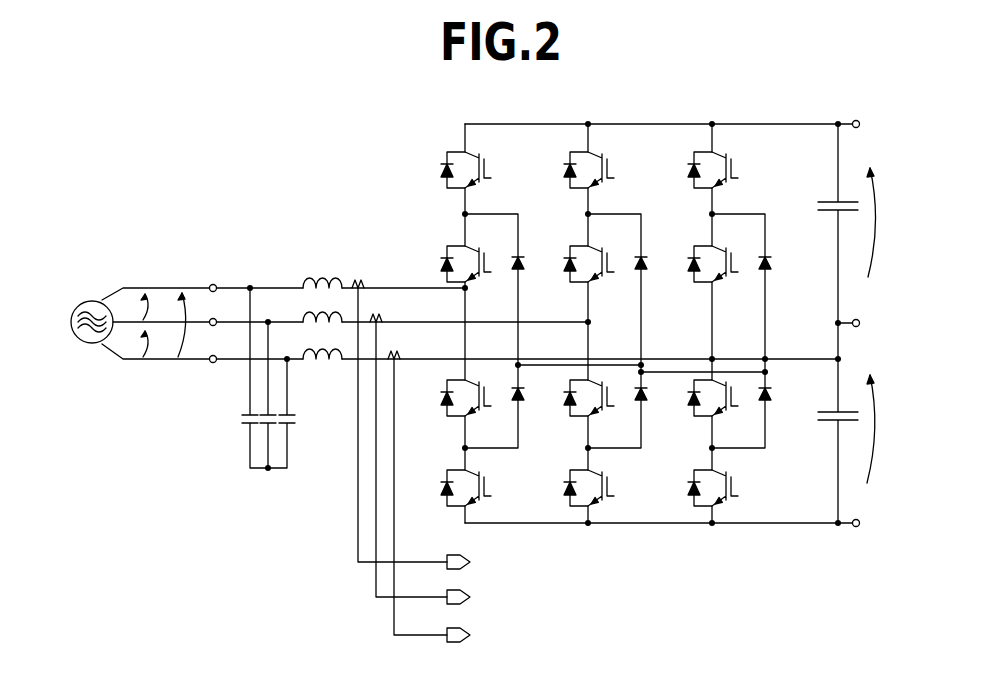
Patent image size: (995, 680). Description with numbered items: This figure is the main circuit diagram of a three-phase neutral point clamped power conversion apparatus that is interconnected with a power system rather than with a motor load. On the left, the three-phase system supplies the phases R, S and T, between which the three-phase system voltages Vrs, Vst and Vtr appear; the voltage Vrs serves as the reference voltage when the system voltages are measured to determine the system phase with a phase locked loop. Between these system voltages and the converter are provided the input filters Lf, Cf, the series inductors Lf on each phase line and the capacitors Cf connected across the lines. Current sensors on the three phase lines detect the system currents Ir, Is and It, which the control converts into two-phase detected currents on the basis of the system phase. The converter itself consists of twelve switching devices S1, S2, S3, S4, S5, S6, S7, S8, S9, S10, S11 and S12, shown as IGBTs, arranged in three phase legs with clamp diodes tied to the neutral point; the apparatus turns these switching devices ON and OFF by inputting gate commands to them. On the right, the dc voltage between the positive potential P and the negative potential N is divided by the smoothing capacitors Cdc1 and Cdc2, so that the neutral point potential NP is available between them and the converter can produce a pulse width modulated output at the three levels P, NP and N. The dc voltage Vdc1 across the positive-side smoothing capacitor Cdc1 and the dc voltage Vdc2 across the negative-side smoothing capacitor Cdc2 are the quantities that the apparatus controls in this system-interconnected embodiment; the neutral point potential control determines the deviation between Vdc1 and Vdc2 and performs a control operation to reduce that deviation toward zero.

The switching device S1 is at (447, 153).
The switching device S2 is at (447, 247).
The switching device S3 is at (458, 416).
The switching device S4 is at (450, 506).
The switching device S5 is at (568, 152).
The switching device S6 is at (577, 247).
The switching device S7 is at (578, 416).
The switching device S8 is at (567, 506).
The switching device S9 is at (692, 152).
The switching device S10 is at (702, 247).
The switching device S11 is at (702, 416).
The switching device S12 is at (694, 506).
The input filter inductor Lf is at (322, 307).
The input filter capacitor Cf is at (278, 378).
The smoothing capacitor Cdc1 is at (825, 223).
The smoothing capacitor Cdc2 is at (826, 423).
The dc voltage Vdc1 is at (894, 222).
The dc voltage Vdc2 is at (894, 429).
The system current Ir is at (422, 426).
The system current Is is at (431, 460).
The system current It is at (439, 498).
The R phase R is at (212, 279).
The S phase S is at (212, 313).
The T phase T is at (212, 350).
The positive dc potential P is at (857, 125).
The neutral point potential NP is at (863, 324).
The negative dc potential N is at (859, 524).
The system voltage Vrs is at (131, 307).
The system voltage Vtr is at (171, 325).
The system voltage Vst is at (131, 344).